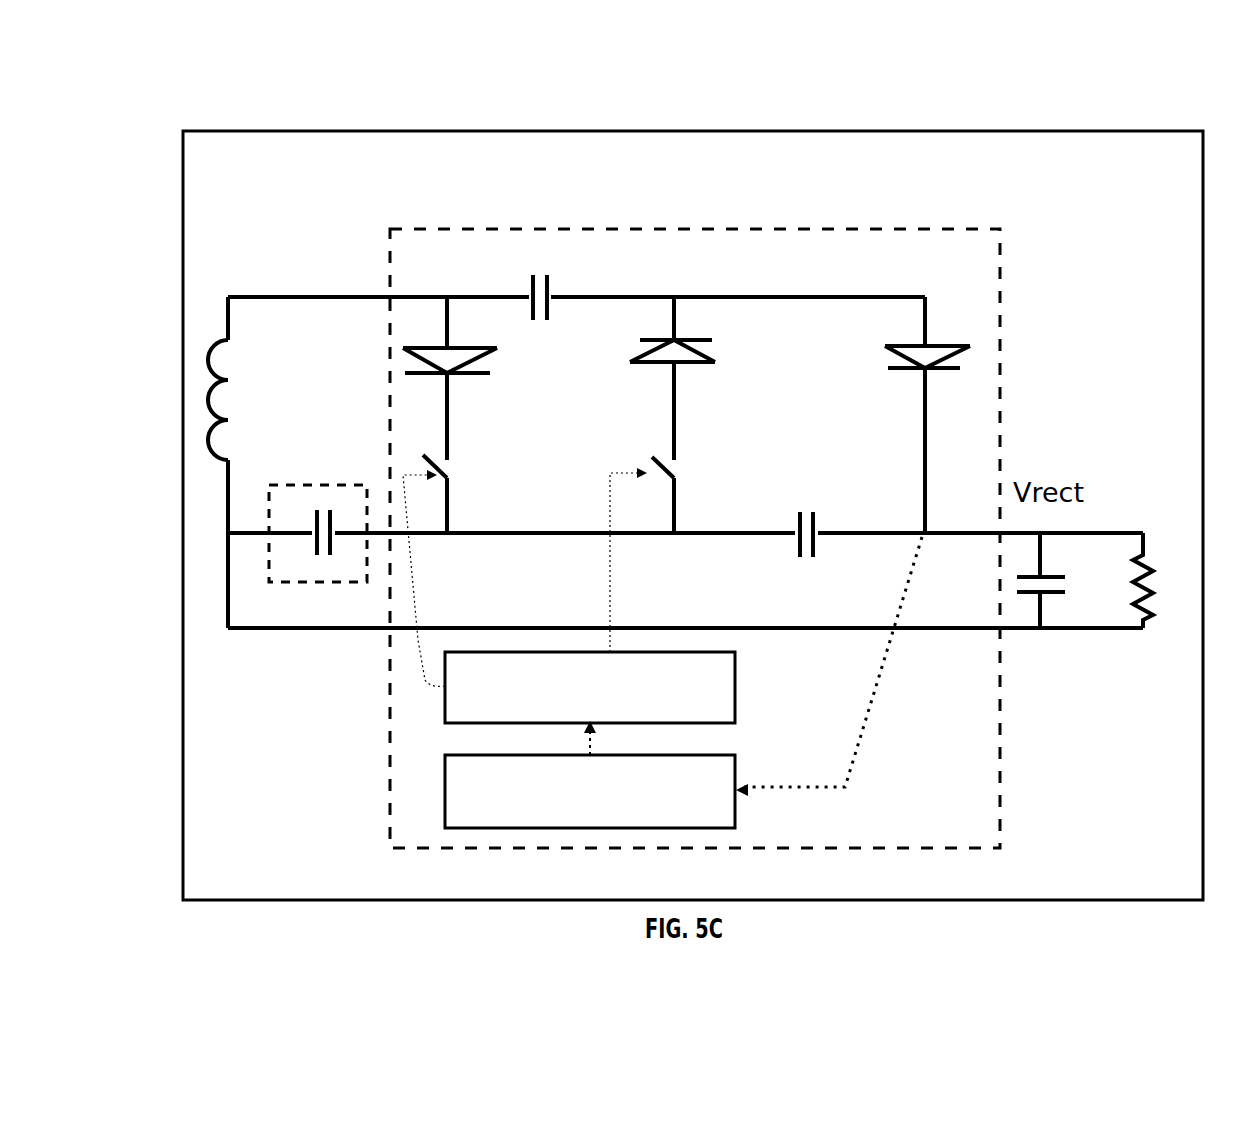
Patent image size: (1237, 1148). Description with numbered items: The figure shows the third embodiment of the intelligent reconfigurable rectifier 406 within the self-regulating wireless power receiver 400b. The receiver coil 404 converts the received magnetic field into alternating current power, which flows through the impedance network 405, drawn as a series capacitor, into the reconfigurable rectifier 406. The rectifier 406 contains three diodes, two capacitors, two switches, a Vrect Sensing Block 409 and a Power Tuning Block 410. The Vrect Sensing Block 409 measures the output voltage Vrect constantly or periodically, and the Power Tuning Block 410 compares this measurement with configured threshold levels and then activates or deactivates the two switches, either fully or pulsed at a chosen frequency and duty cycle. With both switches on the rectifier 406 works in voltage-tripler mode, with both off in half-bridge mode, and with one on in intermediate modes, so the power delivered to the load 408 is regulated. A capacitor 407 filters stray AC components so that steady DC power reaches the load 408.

The self-regulating wireless power receiver 400b is at (668, 122).
The receiver coil 404 is at (235, 396).
The impedance network 405 is at (320, 485).
The reconfigurable rectifier 406 is at (737, 520).
The capacitor 407 is at (1052, 598).
The load 408 is at (1153, 577).
The Vrect Sensing Block 409 is at (445, 797).
The Power Tuning Block 410 is at (445, 697).